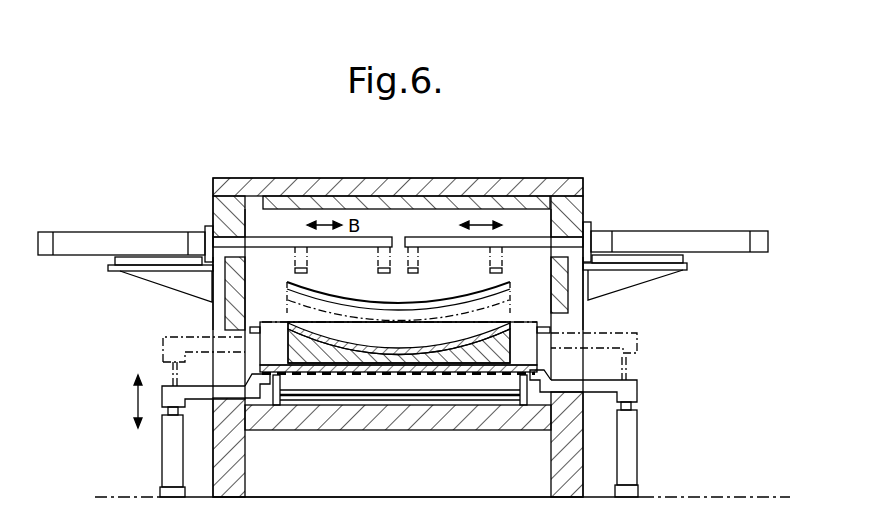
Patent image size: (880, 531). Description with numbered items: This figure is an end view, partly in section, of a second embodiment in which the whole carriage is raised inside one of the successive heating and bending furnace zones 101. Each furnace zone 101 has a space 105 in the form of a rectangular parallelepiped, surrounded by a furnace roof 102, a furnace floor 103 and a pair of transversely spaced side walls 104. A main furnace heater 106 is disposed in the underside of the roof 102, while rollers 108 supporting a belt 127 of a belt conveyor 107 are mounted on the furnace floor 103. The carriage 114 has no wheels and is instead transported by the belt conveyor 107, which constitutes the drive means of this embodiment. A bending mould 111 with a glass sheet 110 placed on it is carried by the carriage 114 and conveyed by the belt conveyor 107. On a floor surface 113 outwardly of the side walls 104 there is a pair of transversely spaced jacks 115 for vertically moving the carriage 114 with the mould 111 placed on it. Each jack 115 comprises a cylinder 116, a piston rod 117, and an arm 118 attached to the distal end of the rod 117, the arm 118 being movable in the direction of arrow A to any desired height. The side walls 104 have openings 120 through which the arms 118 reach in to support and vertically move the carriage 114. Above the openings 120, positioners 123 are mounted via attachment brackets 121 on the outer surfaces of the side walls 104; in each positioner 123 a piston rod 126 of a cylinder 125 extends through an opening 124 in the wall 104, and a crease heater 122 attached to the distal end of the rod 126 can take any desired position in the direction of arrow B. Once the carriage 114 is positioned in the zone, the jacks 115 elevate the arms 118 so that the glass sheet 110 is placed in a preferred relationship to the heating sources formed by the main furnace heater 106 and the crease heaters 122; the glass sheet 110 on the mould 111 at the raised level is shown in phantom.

The heating and bending furnace zone 101 is at (546, 164).
The furnace roof 102 is at (468, 178).
The furnace floor 103 is at (397, 418).
The side walls 104 is at (217, 322).
The space 105 is at (587, 178).
The main furnace heater 106 is at (332, 206).
The belt conveyor 107 is at (445, 398).
The rollers 108 is at (498, 387).
The glass sheet 110 is at (347, 337).
The bending mould 111 is at (312, 350).
The floor surface 113 is at (655, 497).
The carriage 114 is at (472, 367).
The jacks 115 is at (155, 418).
The cylinder 116 is at (632, 457).
The piston rod 117 is at (635, 407).
The arm 118 is at (627, 390).
The openings 120 is at (570, 365).
The attachment brackets 121 is at (640, 277).
The crease heaters 122 is at (415, 270).
The positioners 123 is at (137, 228).
The opening 124 is at (538, 221).
The cylinder 125 is at (737, 237).
The piston rod 126 is at (427, 243).
The belt 127 is at (356, 345).